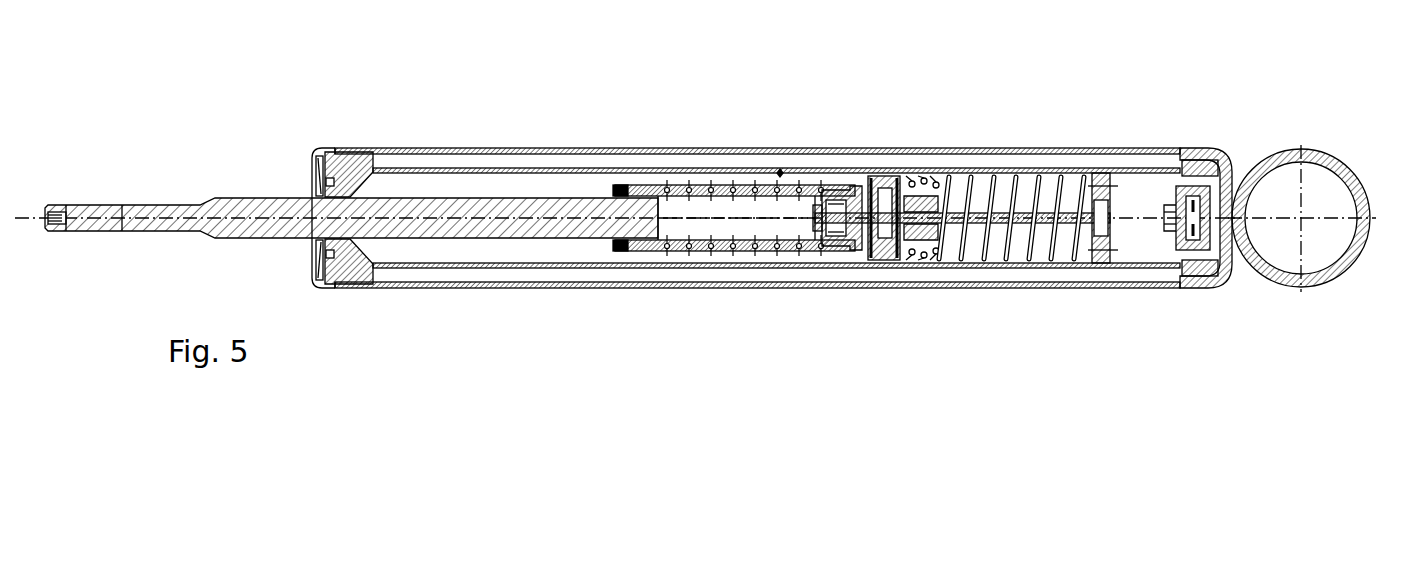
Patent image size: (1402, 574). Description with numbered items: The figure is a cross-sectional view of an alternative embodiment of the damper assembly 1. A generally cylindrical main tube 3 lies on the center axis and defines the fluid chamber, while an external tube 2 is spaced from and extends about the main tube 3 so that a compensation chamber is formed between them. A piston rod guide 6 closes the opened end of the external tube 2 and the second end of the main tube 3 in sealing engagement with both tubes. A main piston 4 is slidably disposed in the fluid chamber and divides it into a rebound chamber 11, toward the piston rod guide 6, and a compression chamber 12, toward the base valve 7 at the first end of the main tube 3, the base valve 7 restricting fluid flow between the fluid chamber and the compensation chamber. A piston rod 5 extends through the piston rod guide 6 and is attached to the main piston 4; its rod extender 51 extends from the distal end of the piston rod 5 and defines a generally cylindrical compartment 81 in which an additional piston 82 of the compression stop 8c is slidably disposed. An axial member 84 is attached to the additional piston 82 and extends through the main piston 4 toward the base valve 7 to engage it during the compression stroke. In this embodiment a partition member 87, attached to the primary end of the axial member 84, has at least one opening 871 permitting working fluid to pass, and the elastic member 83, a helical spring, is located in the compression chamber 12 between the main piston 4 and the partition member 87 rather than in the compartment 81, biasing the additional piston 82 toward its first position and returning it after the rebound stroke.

The damper assembly 1 is at (646, 132).
The external tube 2 is at (445, 148).
The main tube 3 is at (473, 168).
The piston rod 5 is at (553, 196).
The piston rod guide 6 is at (336, 148).
The rebound chamber 11 is at (592, 190).
The compartment 81 is at (697, 184).
The rod extender 51 is at (731, 185).
The flow passage 8c is at (781, 168).
The additional piston 82 is at (834, 186).
The main piston 4 is at (922, 176).
The axial member 84 is at (968, 180).
The elastic member 83 is at (1028, 175).
The opening 871 is at (1096, 174).
The partition member 87 is at (1109, 173).
The compression chamber 12 is at (1143, 197).
The base valve 7 is at (1198, 160).